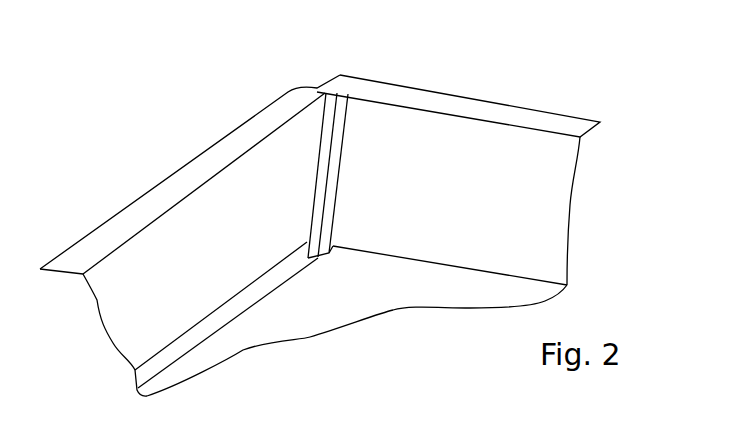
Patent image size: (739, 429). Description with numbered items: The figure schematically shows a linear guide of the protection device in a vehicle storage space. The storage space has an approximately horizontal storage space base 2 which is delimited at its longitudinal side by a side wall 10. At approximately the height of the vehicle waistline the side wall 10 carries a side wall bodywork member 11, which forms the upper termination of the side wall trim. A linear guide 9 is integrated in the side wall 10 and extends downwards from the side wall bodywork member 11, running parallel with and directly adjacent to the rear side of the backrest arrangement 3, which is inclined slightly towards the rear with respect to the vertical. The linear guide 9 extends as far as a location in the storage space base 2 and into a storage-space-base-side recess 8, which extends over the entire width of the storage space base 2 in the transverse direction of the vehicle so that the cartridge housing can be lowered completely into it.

The storage space base 2 is at (377, 302).
The backrest arrangement 3 is at (197, 227).
The storage-space-base-side recess 8 is at (243, 312).
The linear guide 9 is at (336, 166).
The side wall 10 is at (486, 211).
The side wall bodywork member 11 is at (429, 106).